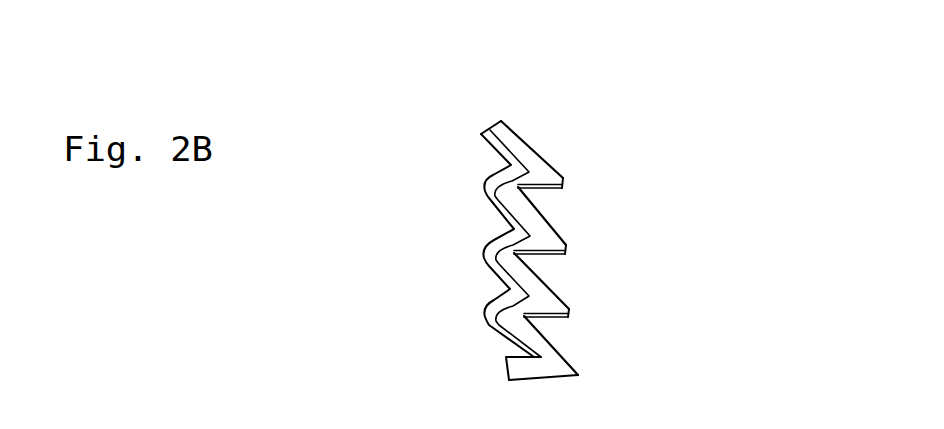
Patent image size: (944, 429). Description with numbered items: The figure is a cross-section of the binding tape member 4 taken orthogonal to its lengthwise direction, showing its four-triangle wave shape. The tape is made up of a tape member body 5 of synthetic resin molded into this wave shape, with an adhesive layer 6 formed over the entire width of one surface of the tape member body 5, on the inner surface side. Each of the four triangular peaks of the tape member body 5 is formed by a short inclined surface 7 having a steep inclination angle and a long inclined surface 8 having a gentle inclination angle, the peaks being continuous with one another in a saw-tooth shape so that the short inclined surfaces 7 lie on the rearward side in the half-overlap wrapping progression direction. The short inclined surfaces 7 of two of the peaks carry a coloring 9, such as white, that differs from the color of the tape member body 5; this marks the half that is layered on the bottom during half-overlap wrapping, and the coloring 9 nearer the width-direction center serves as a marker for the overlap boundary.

The binding tape member 4 is at (597, 212).
The tape member body 5 is at (527, 143).
The adhesive layer 6 is at (497, 157).
The short inclined surface 7 is at (553, 240).
The long inclined surface 8 is at (556, 227).
The coloring 9 is at (557, 191).